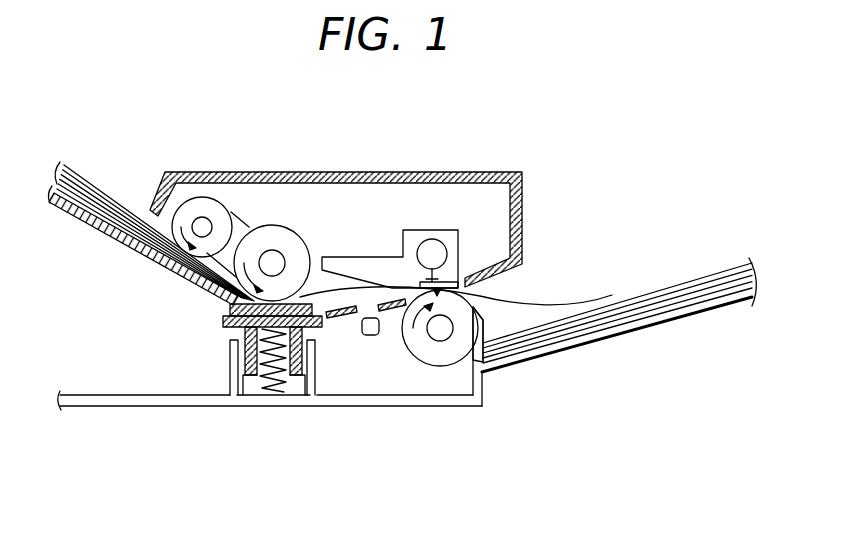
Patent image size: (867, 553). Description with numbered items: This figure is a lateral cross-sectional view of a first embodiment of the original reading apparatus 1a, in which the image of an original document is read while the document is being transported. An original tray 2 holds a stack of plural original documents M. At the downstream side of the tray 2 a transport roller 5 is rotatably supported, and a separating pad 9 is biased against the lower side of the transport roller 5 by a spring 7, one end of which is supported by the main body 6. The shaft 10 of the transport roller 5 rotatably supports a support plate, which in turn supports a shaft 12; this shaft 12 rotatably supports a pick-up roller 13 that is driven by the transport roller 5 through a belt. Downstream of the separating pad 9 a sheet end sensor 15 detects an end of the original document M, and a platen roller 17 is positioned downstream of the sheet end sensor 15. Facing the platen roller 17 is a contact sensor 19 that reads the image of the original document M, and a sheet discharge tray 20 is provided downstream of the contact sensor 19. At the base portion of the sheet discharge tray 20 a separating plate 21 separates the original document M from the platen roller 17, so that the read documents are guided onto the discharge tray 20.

The original reading apparatus 1a is at (375, 158).
The original documents M is at (92, 182).
The original tray 2 is at (121, 240).
The transport roller 5 is at (297, 240).
The main body 6 is at (176, 400).
The spring 7 is at (252, 378).
The separating pad 9 is at (230, 307).
The shaft 10 is at (272, 256).
The shaft 12 is at (207, 222).
The pick-up roller 13 is at (196, 215).
The sheet end sensor 15 is at (370, 338).
The platen roller 17 is at (412, 340).
The contact sensor 19 is at (431, 250).
The sheet discharge tray 20 is at (604, 332).
The separating plate 21 is at (484, 318).